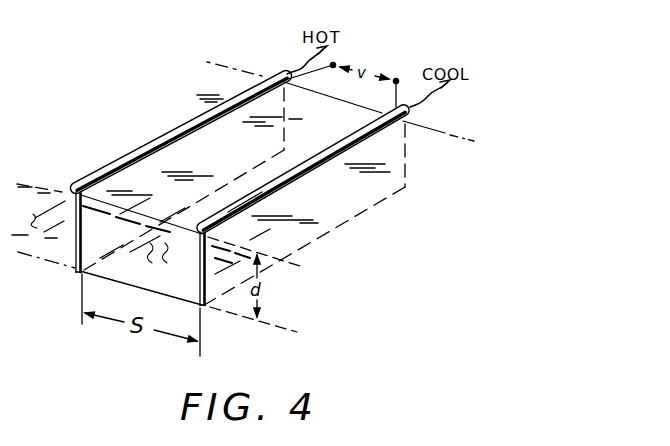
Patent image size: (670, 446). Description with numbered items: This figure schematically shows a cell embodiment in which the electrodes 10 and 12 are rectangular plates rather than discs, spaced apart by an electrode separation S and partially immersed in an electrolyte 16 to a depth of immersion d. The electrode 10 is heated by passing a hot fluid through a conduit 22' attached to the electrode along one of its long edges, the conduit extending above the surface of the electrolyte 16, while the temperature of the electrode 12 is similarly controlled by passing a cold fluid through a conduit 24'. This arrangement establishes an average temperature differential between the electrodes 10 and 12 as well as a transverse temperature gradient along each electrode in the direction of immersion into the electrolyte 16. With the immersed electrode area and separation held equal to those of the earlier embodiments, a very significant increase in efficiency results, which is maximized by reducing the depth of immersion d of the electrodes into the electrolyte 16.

The electrode 10 is at (77, 264).
The electrode 12 is at (207, 302).
The electrolyte 16 is at (125, 272).
The conduit 22' is at (180, 131).
The conduit 24' is at (303, 174).